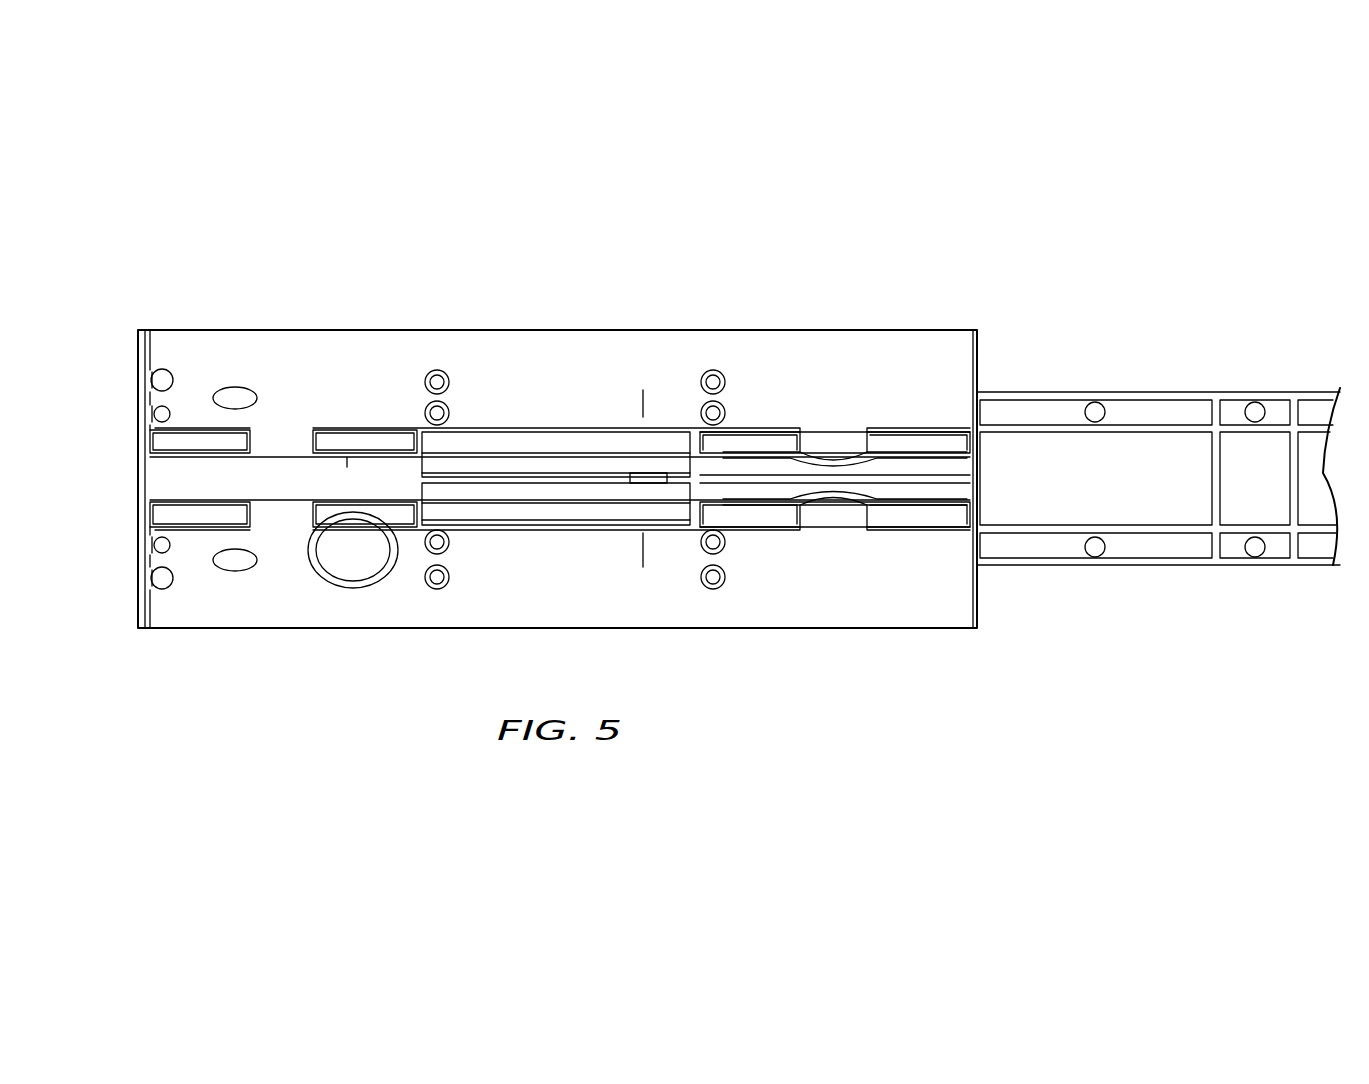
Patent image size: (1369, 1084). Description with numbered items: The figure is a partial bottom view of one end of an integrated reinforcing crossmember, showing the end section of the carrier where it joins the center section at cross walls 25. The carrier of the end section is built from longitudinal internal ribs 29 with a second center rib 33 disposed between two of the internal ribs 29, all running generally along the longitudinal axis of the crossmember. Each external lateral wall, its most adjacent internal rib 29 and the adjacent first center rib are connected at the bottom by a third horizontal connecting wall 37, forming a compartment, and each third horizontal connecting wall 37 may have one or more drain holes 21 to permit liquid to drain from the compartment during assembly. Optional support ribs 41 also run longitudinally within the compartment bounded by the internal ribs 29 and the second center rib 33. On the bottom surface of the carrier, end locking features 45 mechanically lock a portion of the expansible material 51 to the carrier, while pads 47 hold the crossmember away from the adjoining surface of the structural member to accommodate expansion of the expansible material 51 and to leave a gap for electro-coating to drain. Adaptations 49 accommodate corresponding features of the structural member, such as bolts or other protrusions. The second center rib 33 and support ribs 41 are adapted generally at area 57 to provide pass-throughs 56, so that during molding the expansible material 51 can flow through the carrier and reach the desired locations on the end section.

The drain holes 21 is at (437, 372).
The cross walls 25 is at (977, 358).
The internal ribs 29 is at (570, 427).
The second center rib 33 is at (507, 473).
The third horizontal connecting wall 37 is at (907, 355).
The support ribs 41 is at (634, 447).
The end locking features 45 is at (165, 576).
The pads 47 is at (235, 396).
The adaptations 49 is at (355, 588).
The expansible material 51 is at (317, 372).
The pass-throughs 56 is at (833, 452).
The area 57 is at (725, 515).